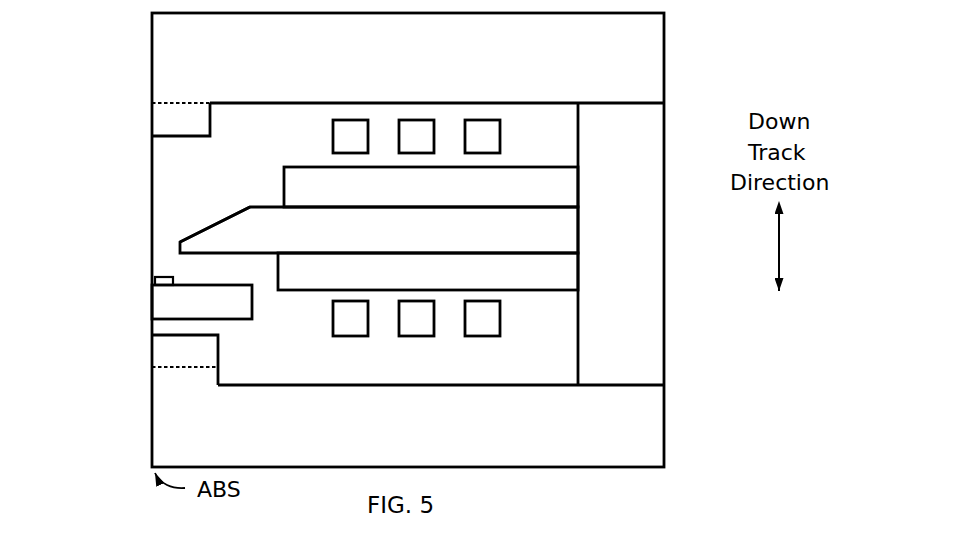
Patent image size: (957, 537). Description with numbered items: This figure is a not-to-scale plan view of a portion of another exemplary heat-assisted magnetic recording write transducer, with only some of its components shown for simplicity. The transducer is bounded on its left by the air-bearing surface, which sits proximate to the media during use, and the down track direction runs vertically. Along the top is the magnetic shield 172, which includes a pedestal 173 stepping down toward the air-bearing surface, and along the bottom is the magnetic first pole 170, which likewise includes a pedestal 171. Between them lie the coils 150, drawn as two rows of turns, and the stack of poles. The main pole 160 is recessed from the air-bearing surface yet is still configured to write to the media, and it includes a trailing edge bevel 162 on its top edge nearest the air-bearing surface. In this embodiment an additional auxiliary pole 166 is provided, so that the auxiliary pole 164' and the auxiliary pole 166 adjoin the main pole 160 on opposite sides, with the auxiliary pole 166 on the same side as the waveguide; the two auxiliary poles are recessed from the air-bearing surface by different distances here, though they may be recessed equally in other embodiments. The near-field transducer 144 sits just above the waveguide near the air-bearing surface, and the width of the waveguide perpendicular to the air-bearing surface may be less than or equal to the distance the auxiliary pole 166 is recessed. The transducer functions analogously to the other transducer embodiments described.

The shield 172 is at (408, 65).
The pedestal 173 is at (140, 127).
The coils 150 is at (530, 138).
The auxiliary pole 164' is at (431, 187).
The main pole 160 is at (379, 230).
The trailing edge bevel 162 is at (194, 210).
The auxiliary pole 166 is at (428, 271).
The near-field transducer 144 is at (168, 276).
The first pole 170 is at (408, 414).
The pedestal 171 is at (140, 353).